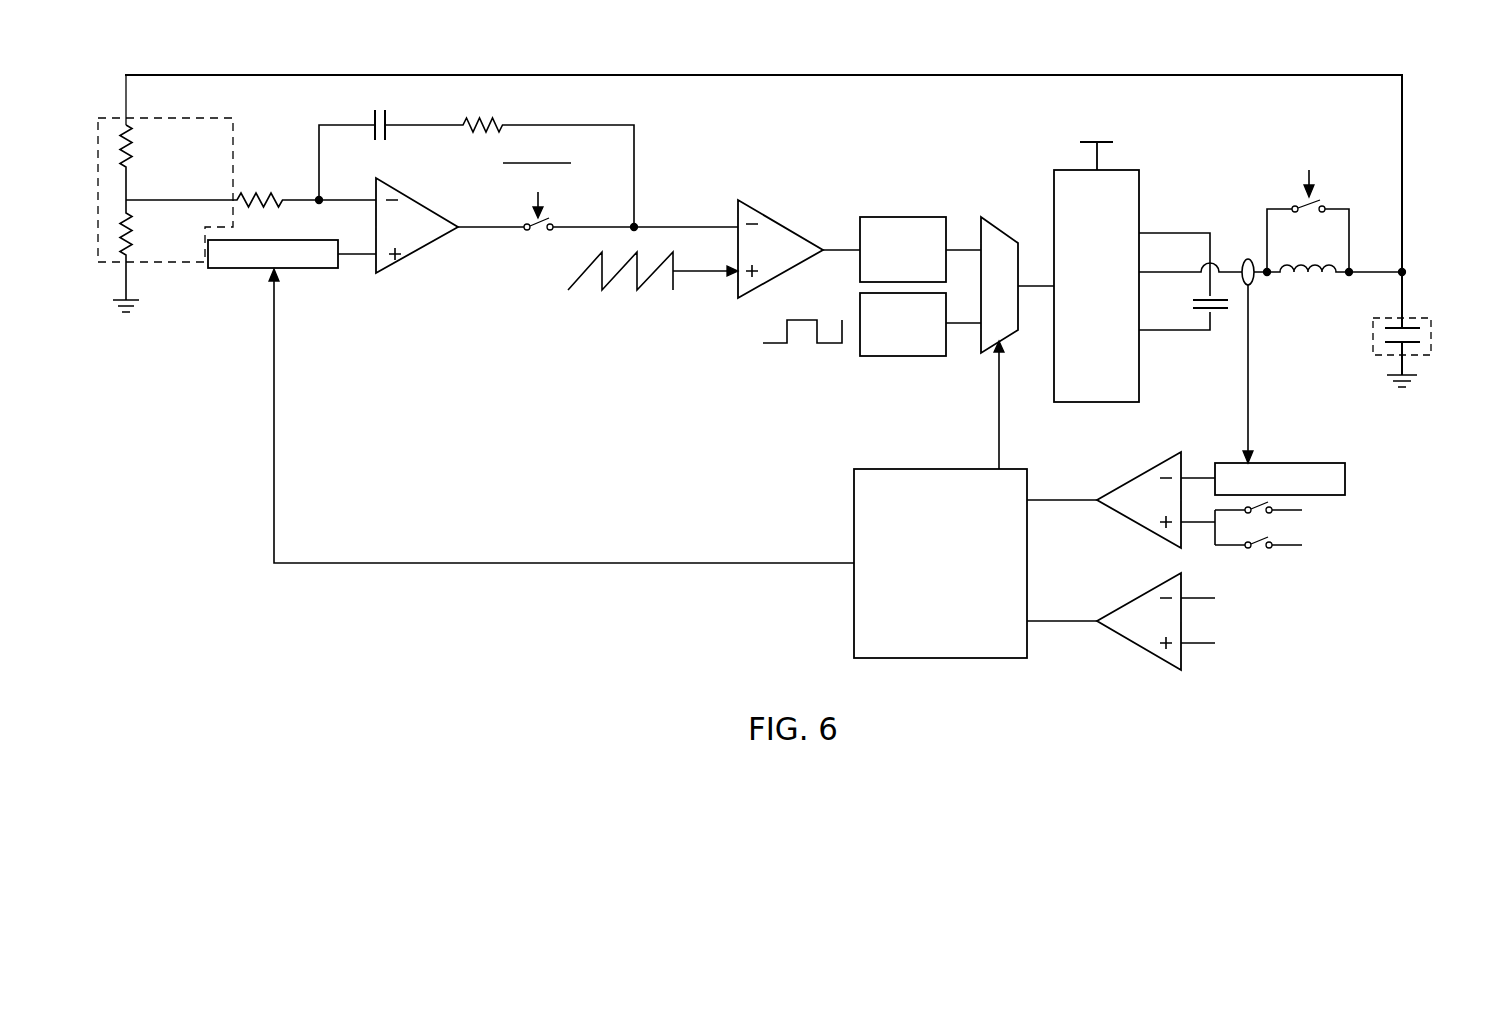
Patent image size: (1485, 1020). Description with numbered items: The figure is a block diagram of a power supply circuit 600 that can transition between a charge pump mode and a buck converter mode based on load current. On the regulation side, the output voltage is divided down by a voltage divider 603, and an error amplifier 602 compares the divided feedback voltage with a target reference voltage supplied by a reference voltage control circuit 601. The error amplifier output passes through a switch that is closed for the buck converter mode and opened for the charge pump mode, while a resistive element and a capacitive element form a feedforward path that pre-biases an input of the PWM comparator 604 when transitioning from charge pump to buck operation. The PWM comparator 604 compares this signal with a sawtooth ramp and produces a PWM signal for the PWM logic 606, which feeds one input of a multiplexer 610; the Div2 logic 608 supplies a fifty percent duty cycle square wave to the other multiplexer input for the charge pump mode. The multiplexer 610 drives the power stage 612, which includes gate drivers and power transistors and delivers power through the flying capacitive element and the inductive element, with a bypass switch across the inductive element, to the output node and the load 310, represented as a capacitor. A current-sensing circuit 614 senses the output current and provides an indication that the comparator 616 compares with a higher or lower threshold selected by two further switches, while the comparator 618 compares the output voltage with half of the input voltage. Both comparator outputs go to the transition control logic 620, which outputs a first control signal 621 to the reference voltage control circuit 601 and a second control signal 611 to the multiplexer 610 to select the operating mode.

The power supply circuit 600 is at (204, 32).
The reference voltage control circuit 601 is at (308, 270).
The error amplifier 602 is at (415, 190).
The voltage divider 603 is at (188, 118).
The pulse-width-modulation comparator 604 is at (785, 224).
The PWM logic 606 is at (905, 217).
The Div2 logic 608 is at (905, 356).
The multiplexer 610 is at (1002, 225).
The second control signal 611 is at (999, 400).
The power stage 612 is at (1122, 170).
The current-sensing circuit 614 is at (1328, 463).
The comparator 616 is at (1137, 478).
The comparator 618 is at (1135, 600).
The transition control logic 620 is at (938, 658).
The first control signal 621 is at (563, 563).
The load 310 is at (1407, 318).